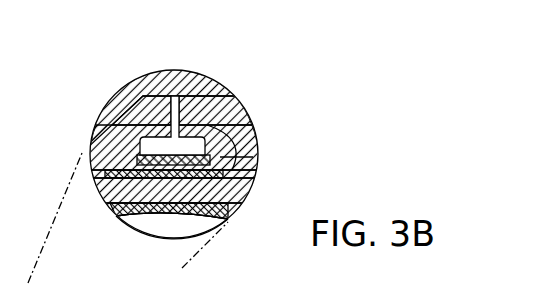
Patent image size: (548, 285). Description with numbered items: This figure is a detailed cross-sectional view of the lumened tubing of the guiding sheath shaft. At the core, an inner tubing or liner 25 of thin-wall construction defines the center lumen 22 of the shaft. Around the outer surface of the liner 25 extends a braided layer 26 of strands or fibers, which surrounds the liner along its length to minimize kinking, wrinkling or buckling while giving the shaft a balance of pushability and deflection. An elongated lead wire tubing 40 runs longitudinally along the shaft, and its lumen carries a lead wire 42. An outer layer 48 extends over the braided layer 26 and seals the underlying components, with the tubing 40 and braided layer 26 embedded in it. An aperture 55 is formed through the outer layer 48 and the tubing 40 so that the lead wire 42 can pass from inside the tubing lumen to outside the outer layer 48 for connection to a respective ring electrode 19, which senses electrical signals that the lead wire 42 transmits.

The ring electrode 19 is at (169, 70).
The center lumen 22 is at (167, 228).
The inner tubing or liner 25 is at (227, 218).
The braided layer 26 is at (120, 203).
The lead wire tubing 40 is at (252, 124).
The lead wire 42 is at (253, 157).
The outer layer 48 is at (92, 141).
The aperture 55 is at (236, 95).